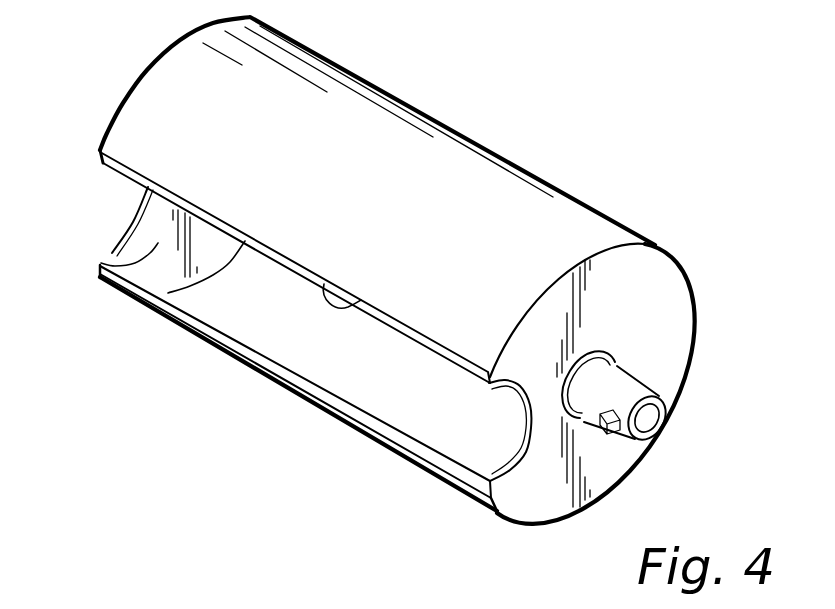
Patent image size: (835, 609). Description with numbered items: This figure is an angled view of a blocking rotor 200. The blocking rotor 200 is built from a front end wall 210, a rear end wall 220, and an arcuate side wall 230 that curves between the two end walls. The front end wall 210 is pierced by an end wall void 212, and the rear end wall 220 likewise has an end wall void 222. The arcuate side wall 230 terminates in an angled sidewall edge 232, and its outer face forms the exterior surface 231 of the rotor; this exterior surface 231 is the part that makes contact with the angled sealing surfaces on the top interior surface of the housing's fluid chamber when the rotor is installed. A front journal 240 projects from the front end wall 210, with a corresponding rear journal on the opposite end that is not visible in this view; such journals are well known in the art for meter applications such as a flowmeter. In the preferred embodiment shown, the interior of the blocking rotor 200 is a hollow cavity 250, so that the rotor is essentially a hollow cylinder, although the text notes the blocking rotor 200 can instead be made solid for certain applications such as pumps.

The blocking rotor 200 is at (396, 295).
The front end wall 210 is at (657, 352).
The end wall void 212 is at (530, 473).
The rear end wall 220 is at (113, 257).
The end wall void 222 is at (147, 222).
The arcuate side wall 230 is at (248, 310).
The exterior surface 231 is at (403, 165).
The angled sidewall edge 232 is at (363, 300).
The front journal 240 is at (607, 368).
The hollow cavity 250 is at (410, 405).